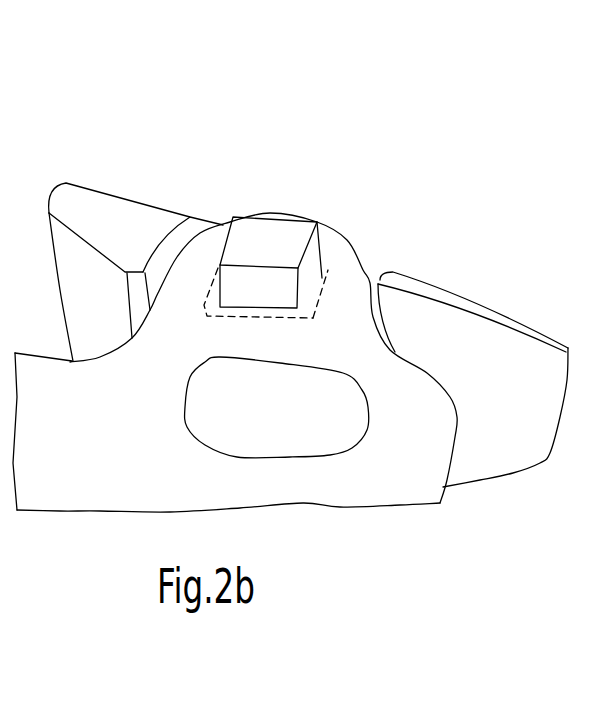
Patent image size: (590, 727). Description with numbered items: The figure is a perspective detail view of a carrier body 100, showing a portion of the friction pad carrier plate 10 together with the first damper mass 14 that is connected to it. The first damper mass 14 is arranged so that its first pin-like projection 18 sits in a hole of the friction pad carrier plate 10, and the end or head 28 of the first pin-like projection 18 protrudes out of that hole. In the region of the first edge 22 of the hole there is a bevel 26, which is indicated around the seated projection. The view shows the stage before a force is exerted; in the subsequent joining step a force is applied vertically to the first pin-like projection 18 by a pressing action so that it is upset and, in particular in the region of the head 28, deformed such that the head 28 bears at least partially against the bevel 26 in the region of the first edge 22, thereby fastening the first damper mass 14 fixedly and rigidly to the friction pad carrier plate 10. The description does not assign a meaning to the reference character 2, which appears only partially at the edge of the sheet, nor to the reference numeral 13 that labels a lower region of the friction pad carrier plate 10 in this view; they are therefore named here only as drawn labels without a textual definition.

The carrier body 100 is at (392, 192).
The adjacent component (partially shown) 2 is at (5, 136).
The friction pad carrier plate 10 is at (405, 482).
The base portion of holder body 13 is at (358, 468).
The first damper mass 14 is at (77, 193).
The first pin-like projection 18 is at (260, 290).
The first edge 22 is at (323, 294).
The bevel 26 is at (211, 296).
The head 28 is at (282, 235).